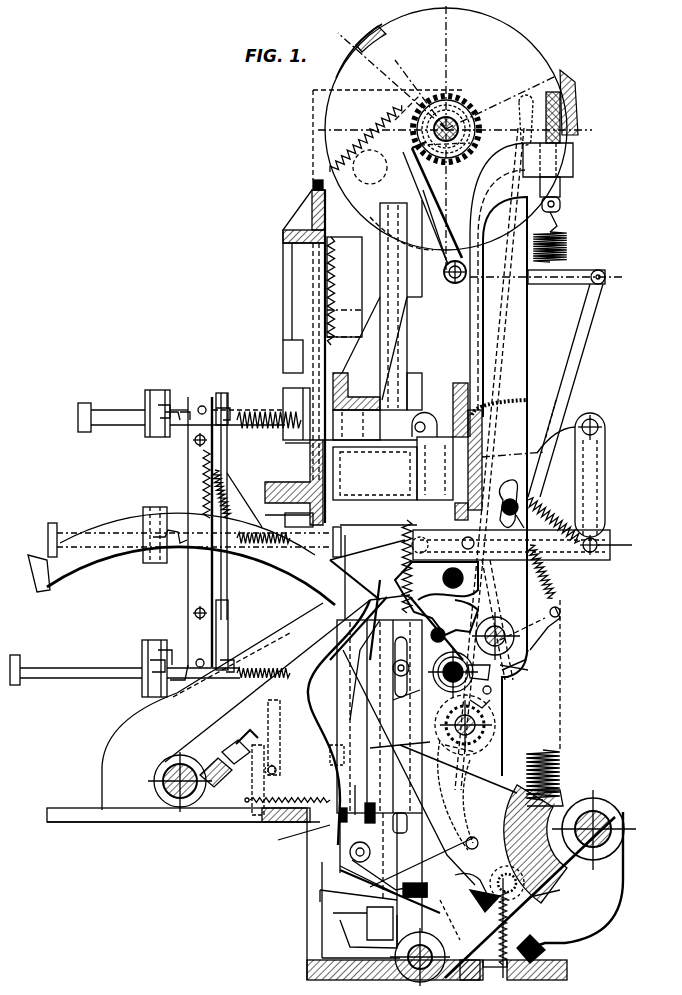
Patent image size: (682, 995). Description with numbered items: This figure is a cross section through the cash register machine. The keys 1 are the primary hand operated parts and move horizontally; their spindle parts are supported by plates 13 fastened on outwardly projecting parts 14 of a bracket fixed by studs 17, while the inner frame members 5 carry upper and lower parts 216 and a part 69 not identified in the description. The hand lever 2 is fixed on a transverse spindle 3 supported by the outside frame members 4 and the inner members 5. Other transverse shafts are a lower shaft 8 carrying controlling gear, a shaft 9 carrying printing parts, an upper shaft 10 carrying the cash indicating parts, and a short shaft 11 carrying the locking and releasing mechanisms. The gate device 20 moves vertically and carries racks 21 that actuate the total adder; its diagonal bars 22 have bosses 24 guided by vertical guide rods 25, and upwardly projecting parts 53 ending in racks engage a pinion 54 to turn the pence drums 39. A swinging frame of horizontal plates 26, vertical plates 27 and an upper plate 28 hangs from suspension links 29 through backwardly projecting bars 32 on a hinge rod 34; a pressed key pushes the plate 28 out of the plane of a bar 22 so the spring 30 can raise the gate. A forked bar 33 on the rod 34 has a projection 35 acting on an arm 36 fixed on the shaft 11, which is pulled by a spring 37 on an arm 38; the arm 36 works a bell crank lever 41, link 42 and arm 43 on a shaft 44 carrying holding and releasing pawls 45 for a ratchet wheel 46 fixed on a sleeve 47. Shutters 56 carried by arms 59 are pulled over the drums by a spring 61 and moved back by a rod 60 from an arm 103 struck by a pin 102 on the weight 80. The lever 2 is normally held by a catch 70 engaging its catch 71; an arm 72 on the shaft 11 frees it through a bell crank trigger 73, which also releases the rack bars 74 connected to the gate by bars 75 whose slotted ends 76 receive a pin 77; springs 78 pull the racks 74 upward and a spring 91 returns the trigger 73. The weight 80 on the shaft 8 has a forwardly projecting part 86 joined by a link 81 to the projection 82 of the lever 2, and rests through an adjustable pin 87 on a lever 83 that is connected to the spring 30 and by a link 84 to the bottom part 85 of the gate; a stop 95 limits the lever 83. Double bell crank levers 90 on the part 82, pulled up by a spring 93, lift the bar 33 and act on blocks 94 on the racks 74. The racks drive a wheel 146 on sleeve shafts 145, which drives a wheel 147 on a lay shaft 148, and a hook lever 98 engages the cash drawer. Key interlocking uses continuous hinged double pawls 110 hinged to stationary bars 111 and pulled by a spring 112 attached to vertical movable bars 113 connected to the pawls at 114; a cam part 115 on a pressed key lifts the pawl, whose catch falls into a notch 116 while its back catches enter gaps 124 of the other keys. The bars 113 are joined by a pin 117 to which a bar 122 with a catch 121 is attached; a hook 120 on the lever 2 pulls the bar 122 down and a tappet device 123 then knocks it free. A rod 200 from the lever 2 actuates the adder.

The keys 1 is at (114, 416).
The hand operated handle or lever 2 is at (80, 567).
The transverse spindle 3 is at (163, 788).
The outside members of the main frame 4 is at (300, 309).
The inner members of the frame 5 is at (573, 158).
The shaft 8 is at (622, 826).
The shaft 9 is at (520, 680).
The shaft 10 is at (462, 160).
The short shaft 11 is at (515, 640).
The plates 13 is at (148, 392).
The outwardly projecting parts 14 is at (182, 562).
The studs 17 is at (265, 420).
The gate device 20 is at (598, 483).
The racks 21 is at (342, 275).
The diagonal bars 22 is at (337, 437).
The bosses 24 is at (418, 392).
The vertical guide rods 25 is at (400, 332).
The horizontal plates 26 is at (345, 540).
The vertical plates 27 is at (350, 471).
The plate 28 is at (337, 417).
The suspension links 29 is at (440, 506).
The spring 30 is at (558, 240).
The horizontal backwardly projecting bars 32 is at (585, 516).
The arm or bar 33 is at (575, 562).
The hinge rod 34 is at (608, 545).
The projection 35 is at (464, 538).
The lever or arm 36 is at (493, 581).
The spring 37 is at (545, 578).
The projecting arm or lever 38 is at (558, 623).
The pence drums 39 is at (536, 62).
The small bell crank lever 41 is at (528, 546).
The link 42 is at (573, 373).
The arm 43 is at (582, 270).
The transverse shaft 44 is at (455, 283).
The holding and releasing pawls 45 is at (436, 222).
The ratchet wheel 46 is at (458, 97).
The sleeve 47 is at (470, 124).
The upwardly projecting parts 53 is at (412, 190).
The toothed pinion 54 is at (440, 165).
The shutters 56 is at (343, 60).
The arm 59 is at (393, 66).
The rod 60 is at (517, 170).
The spring 61 is at (368, 146).
The arch 69 is at (478, 226).
The catch or detent 70 is at (380, 600).
The catch 71 is at (367, 600).
The arm 72 is at (528, 656).
The bell crank trigger 73 is at (436, 602).
The rack bars 74 is at (400, 744).
The bars 75 is at (374, 730).
The slotted ends 76 is at (395, 702).
The pin 77 is at (392, 665).
The springs 78 is at (412, 572).
The weight 80 is at (480, 778).
The link 81 is at (455, 898).
The projection part 82 is at (340, 860).
The lever 83 is at (556, 806).
The link 84 is at (374, 927).
The bottom part 85 is at (343, 923).
The forwardly projecting part 86 is at (423, 957).
The adjustable pin 87 is at (480, 908).
The double bell crank levers 90 is at (340, 872).
The spring 91 is at (495, 676).
The spring 93 is at (275, 824).
The block 94 is at (472, 877).
The stop 95 is at (540, 955).
The hook lever 98 is at (320, 891).
The pin 102 is at (486, 842).
The arm 103 is at (468, 836).
The continuous hinged double pawls 110 is at (186, 410).
The stationary bars 111 is at (195, 460).
The spring 112 is at (205, 468).
The vertical movable bars 113 is at (228, 404).
The pawl connection pins 114 is at (225, 405).
The curved cam shaped part 115 is at (172, 408).
The notch 116 is at (160, 400).
The pin 117 is at (225, 478).
The hook 120 is at (320, 788).
The catch 121 is at (330, 770).
The bar 122 is at (232, 515).
The adjustable tappet device 123 is at (245, 748).
The gaps 124 is at (238, 414).
The sleeve shafts 145 is at (492, 692).
The wheel 146 is at (488, 705).
The wheel 147 is at (490, 727).
The short lay shaft 148 is at (480, 750).
The rod 200 is at (290, 748).
The upper and lower parts 216 is at (312, 464).